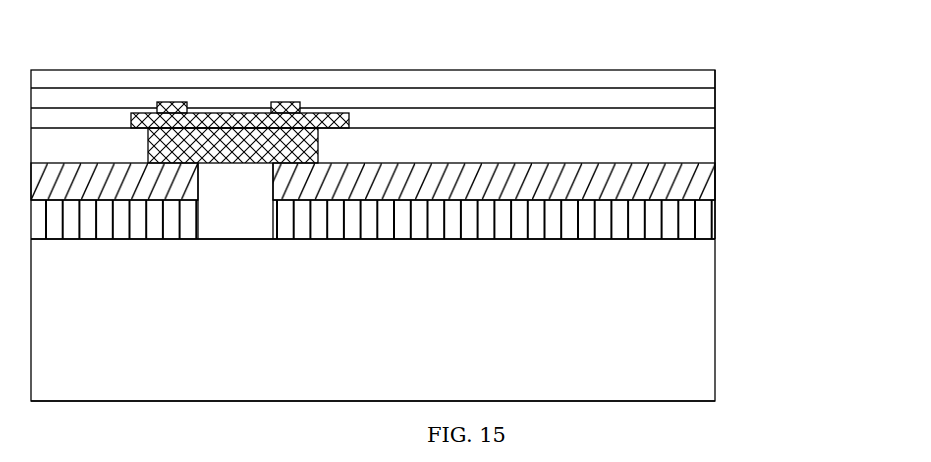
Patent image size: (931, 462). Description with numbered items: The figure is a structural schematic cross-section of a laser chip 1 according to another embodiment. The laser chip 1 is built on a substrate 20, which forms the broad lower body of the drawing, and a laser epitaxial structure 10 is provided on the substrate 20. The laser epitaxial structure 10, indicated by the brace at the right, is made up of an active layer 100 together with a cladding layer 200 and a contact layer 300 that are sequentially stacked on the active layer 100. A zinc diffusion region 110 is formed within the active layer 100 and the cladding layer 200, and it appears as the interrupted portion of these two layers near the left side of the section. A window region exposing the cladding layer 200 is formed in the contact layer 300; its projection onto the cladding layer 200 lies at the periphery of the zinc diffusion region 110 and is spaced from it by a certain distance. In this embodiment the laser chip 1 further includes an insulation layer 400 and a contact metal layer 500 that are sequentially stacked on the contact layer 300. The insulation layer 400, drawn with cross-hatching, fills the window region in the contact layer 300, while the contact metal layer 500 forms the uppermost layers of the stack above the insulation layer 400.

The laser chip 1 is at (690, 43).
The laser epitaxial structure 10 is at (773, 117).
The substrate 20 is at (695, 330).
The active layer 100 is at (687, 222).
The zinc diffusion region 110 is at (239, 221).
The cladding layer 200 is at (688, 183).
The contact layer 300 is at (693, 147).
The insulation layer 400 is at (196, 132).
The contact metal layer 500 is at (693, 93).